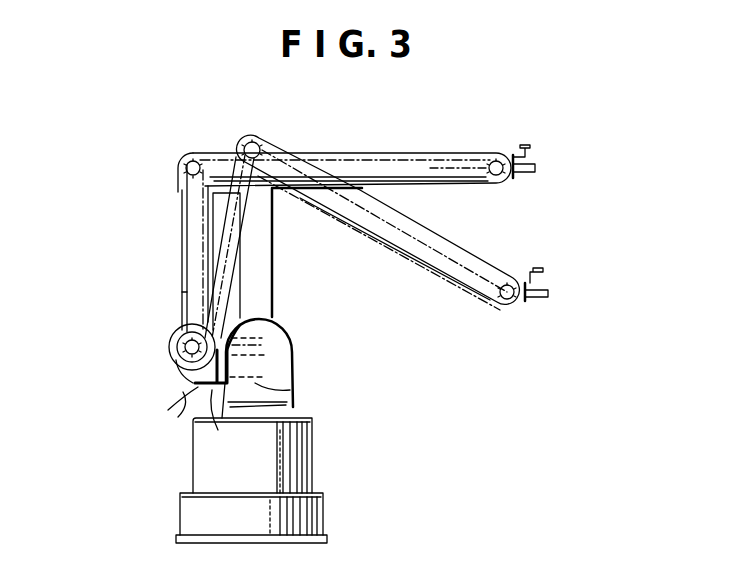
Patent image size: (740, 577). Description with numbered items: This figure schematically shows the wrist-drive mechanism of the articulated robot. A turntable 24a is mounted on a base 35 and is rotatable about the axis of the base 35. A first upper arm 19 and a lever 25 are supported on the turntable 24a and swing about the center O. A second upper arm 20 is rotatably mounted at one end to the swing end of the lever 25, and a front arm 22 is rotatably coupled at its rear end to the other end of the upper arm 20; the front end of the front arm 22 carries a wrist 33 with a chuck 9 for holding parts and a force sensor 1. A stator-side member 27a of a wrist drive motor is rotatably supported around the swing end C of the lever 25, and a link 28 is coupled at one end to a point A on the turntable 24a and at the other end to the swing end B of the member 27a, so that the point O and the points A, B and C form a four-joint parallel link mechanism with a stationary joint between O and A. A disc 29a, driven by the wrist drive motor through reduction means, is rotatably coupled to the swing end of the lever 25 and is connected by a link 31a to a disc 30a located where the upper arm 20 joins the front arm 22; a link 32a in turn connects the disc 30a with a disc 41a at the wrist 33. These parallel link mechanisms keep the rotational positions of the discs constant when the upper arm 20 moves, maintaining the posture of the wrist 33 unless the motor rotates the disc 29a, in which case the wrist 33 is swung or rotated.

The force sensor 1 is at (532, 150).
The chuck 9 is at (538, 170).
The first upper arm 19 is at (266, 248).
The second upper arm 20 is at (185, 292).
The front arm 22 is at (433, 172).
The turntable 24a is at (290, 358).
The lever 25 is at (272, 312).
The member 27a is at (188, 383).
The link 28 is at (228, 426).
The disc 29a is at (190, 360).
The disc 30a is at (194, 158).
The link 31a is at (183, 242).
The link 32a is at (414, 162).
The wrist 33 is at (500, 178).
The base 35 is at (322, 510).
The disc 41a is at (414, 222).
The point A is at (290, 390).
The swing end B is at (175, 419).
The swing end C is at (182, 340).
The center O is at (262, 343).